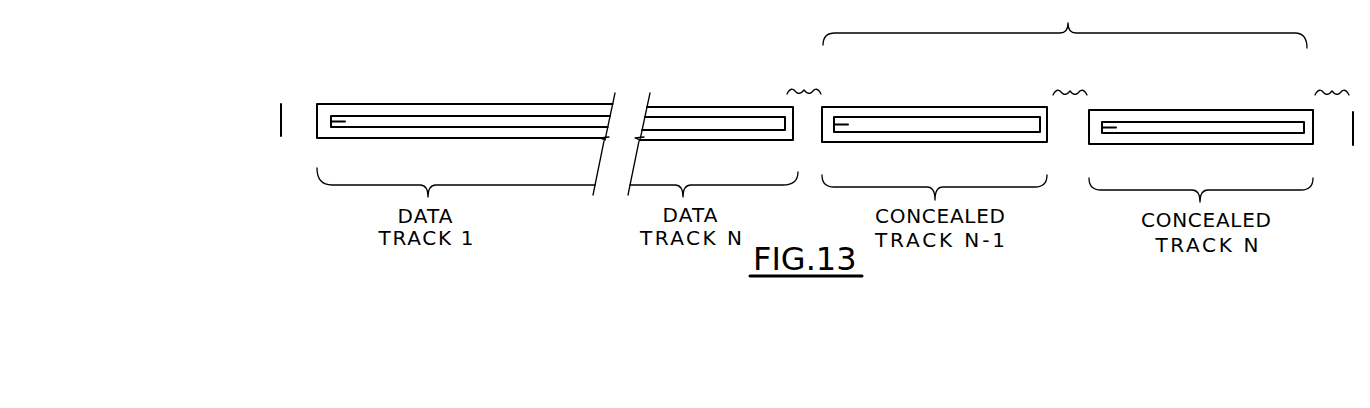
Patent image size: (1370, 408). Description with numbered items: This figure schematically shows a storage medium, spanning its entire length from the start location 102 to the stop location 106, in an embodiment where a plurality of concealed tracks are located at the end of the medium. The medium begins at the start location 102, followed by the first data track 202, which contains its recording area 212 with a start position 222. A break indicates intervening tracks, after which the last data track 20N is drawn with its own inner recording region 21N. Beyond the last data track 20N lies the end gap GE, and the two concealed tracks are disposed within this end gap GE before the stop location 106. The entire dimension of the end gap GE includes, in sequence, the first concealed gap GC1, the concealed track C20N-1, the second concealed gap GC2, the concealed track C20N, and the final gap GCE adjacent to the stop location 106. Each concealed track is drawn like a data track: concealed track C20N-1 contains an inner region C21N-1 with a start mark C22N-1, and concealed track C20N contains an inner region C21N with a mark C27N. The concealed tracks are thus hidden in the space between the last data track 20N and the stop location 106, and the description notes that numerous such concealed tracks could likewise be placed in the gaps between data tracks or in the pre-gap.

The start location 102 is at (281, 118).
The data track 202 is at (343, 110).
The recording area 212 is at (366, 120).
The start position 222 is at (333, 122).
The last data track 20N is at (662, 115).
The data recording region of track N 21N is at (683, 127).
The first concealed gap GC1 is at (804, 77).
The concealed track C20N-1 is at (855, 113).
The data recording region of concealed track N-1 C21N-1 is at (877, 127).
The start sentinel of concealed track N-1 C22N-1 is at (840, 123).
The second concealed gap GC2 is at (1070, 78).
The concealed track C20N is at (1122, 117).
The data recording region of concealed track N C21N is at (1143, 128).
The sentinel of concealed track N C27N is at (1103, 124).
The gap GCE is at (1332, 78).
The end gap GE is at (1065, 24).
The stop location 106 is at (1352, 147).